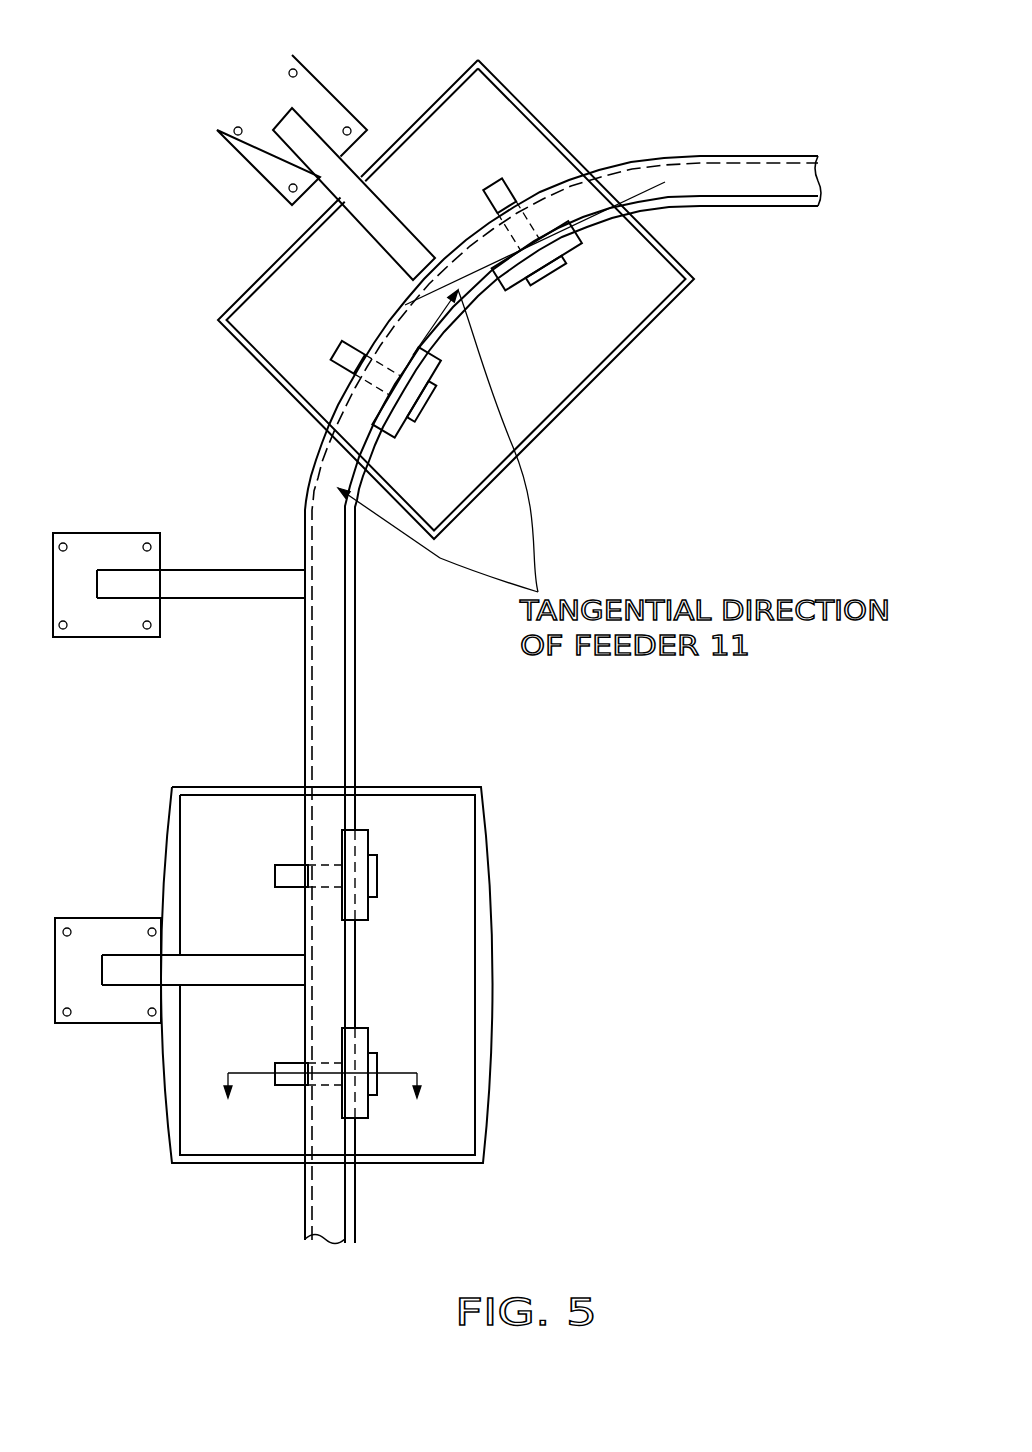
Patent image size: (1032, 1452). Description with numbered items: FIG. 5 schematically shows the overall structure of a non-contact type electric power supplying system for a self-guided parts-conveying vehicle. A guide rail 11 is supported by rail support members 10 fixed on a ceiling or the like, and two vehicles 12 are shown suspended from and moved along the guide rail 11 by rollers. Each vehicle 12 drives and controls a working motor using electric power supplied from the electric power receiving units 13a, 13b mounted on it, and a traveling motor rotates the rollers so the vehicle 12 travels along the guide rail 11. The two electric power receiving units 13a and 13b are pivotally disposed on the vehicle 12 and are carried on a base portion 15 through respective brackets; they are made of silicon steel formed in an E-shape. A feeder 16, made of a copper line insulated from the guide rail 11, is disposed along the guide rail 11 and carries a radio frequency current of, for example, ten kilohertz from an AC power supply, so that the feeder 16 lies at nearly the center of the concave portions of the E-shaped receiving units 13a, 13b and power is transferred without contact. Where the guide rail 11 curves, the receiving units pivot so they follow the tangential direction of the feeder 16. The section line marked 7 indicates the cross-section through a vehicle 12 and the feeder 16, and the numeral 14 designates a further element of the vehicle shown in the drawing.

The section line VII-VII 7 is at (322, 1102).
The rail support member 10 is at (307, 123).
The guide rail 11 is at (731, 172).
The vehicle 12 is at (599, 395).
The electric power receiving unit 13a is at (515, 292).
The electric power receiving unit 13b is at (400, 434).
The pin 14 is at (510, 213).
The base portion 15 is at (508, 180).
The feeder 16 is at (737, 206).